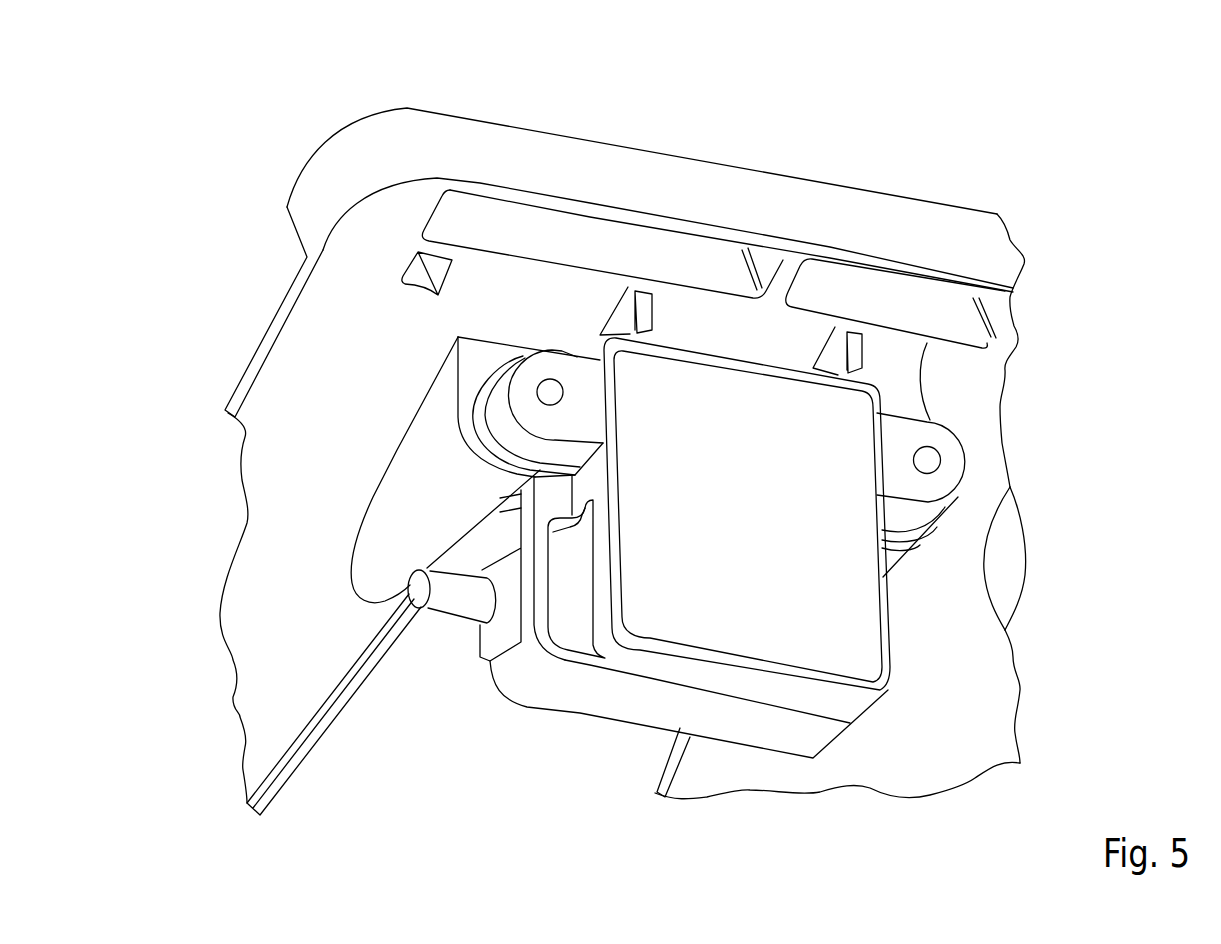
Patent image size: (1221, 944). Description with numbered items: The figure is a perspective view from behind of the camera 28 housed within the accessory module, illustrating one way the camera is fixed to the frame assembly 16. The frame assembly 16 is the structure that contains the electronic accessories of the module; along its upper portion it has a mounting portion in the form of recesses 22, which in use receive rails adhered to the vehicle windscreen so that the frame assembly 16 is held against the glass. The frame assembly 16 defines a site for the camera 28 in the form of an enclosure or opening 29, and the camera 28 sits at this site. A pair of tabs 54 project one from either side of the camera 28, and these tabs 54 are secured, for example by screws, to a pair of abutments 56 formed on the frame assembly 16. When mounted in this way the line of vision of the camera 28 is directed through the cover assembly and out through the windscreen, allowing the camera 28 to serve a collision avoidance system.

The frame assembly 16 is at (430, 140).
The recesses 22 is at (283, 277).
The camera 28 is at (640, 620).
The enclosure 29 is at (327, 738).
The tabs 54 is at (550, 363).
The abutments 56 is at (413, 464).